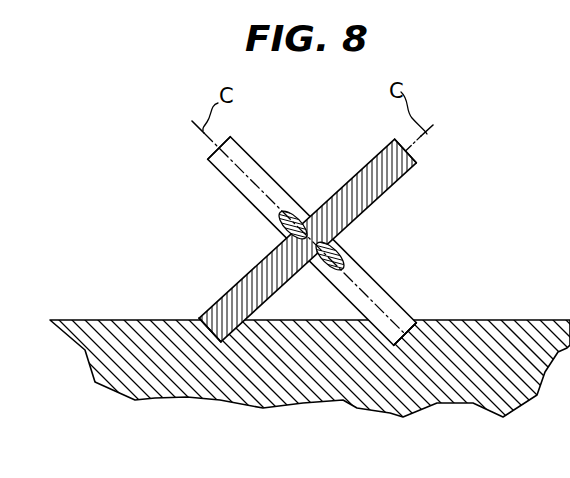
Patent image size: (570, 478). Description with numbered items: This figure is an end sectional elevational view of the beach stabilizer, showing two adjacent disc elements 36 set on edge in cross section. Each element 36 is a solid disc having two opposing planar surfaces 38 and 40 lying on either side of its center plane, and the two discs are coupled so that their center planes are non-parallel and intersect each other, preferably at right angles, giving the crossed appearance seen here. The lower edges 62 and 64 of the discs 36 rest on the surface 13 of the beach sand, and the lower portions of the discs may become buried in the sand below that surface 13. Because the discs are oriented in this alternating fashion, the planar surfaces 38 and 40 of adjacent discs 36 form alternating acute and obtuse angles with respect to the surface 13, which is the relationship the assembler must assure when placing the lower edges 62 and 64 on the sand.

The surface of the beach 13 is at (540, 321).
The element 36 is at (280, 222).
The planar surface 38 is at (255, 161).
The planar surface 40 is at (223, 177).
The lower edge 62 is at (200, 319).
The lower edge 64 is at (416, 323).